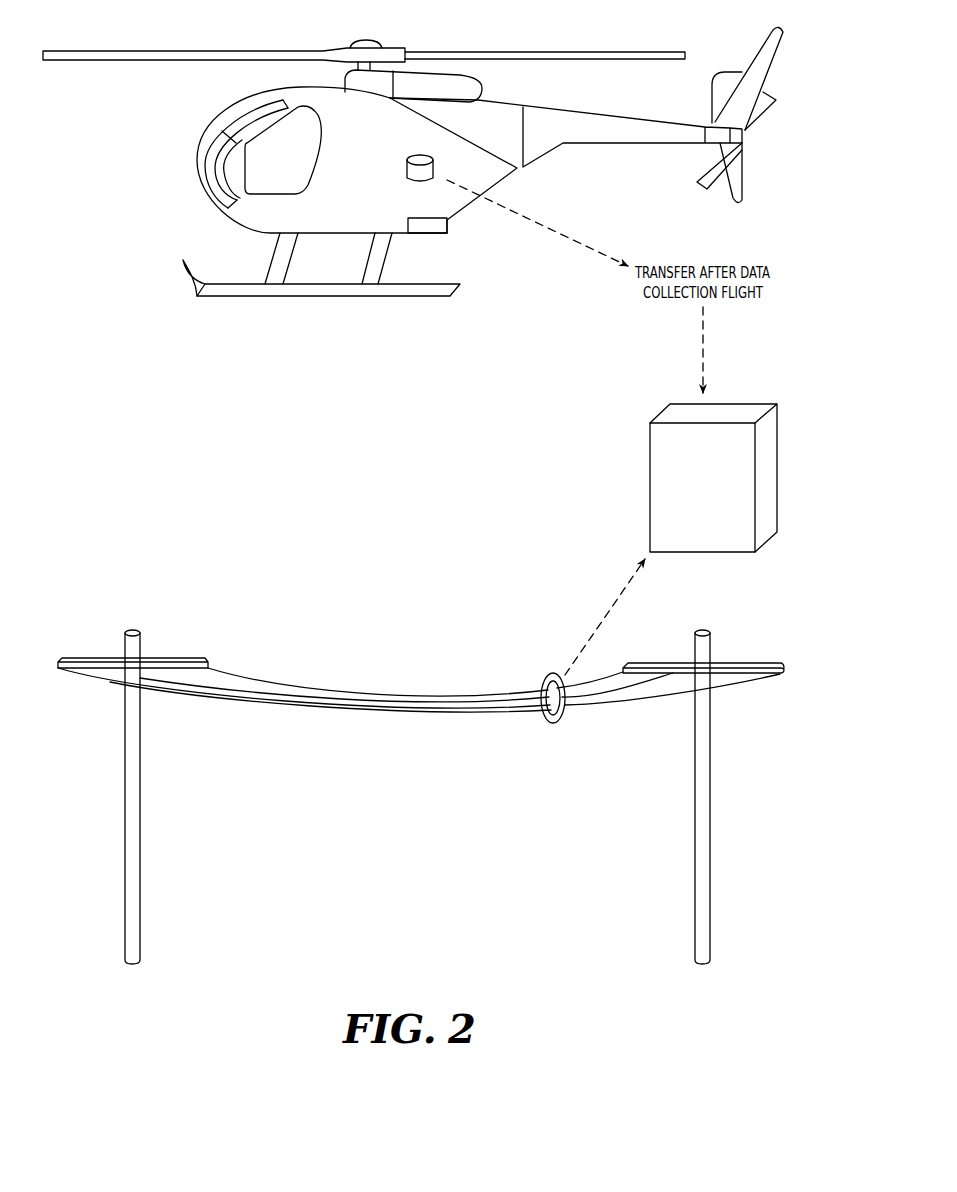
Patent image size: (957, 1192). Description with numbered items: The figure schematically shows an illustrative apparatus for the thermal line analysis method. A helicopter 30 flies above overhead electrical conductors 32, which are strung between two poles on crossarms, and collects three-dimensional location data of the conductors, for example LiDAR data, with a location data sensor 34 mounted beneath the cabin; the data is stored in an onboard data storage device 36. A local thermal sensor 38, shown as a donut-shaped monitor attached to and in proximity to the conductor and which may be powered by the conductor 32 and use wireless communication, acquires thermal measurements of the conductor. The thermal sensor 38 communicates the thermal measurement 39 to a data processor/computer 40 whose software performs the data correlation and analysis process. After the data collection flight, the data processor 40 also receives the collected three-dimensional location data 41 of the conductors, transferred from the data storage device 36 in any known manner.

The helicopter 30 is at (143, 111).
The overhead electrical conductors 32 is at (194, 617).
The location data sensor 34 is at (447, 225).
The onboard data storage device 36 is at (433, 163).
The local thermal sensor 38 is at (553, 723).
The thermal measurement 39 is at (608, 614).
The data processor/computer 40 is at (655, 461).
The collected 3-dimensional location data 41 is at (703, 345).